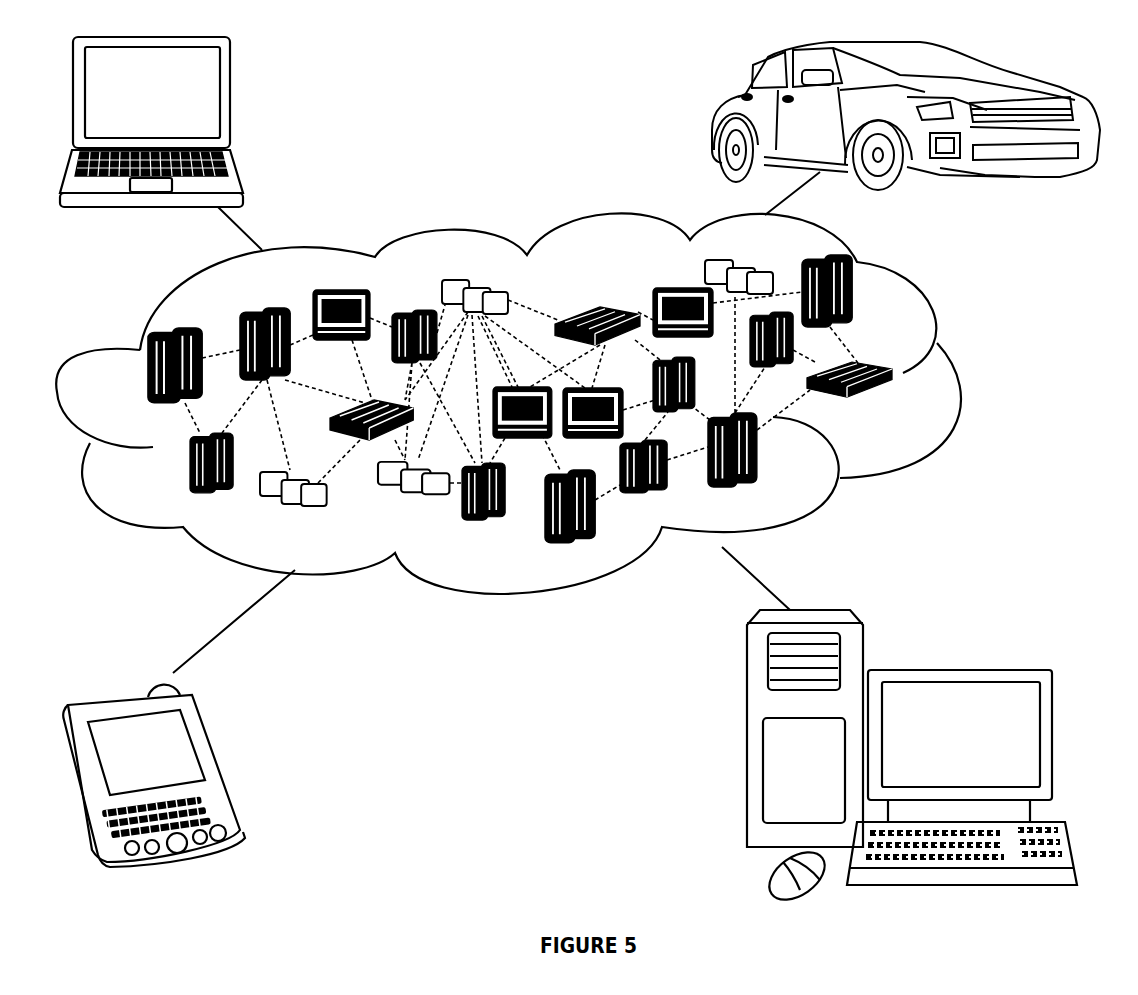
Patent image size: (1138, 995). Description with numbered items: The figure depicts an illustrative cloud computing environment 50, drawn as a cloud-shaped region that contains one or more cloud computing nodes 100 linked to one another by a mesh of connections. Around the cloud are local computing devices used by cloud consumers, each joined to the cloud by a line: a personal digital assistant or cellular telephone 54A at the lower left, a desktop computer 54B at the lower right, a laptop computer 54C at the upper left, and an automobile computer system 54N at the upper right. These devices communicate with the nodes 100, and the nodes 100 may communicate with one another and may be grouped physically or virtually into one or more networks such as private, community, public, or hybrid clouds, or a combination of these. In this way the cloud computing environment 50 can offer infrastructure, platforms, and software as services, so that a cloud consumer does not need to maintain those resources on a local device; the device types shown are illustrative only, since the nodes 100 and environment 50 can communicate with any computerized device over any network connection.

The cloud computing environment 50 is at (957, 381).
The cloud computing nodes 100 is at (893, 407).
The personal digital assistant or cellular telephone 54A is at (213, 767).
The desktop computer 54B is at (957, 668).
The laptop computer 54C is at (230, 98).
The automobile computer system 54N is at (713, 118).